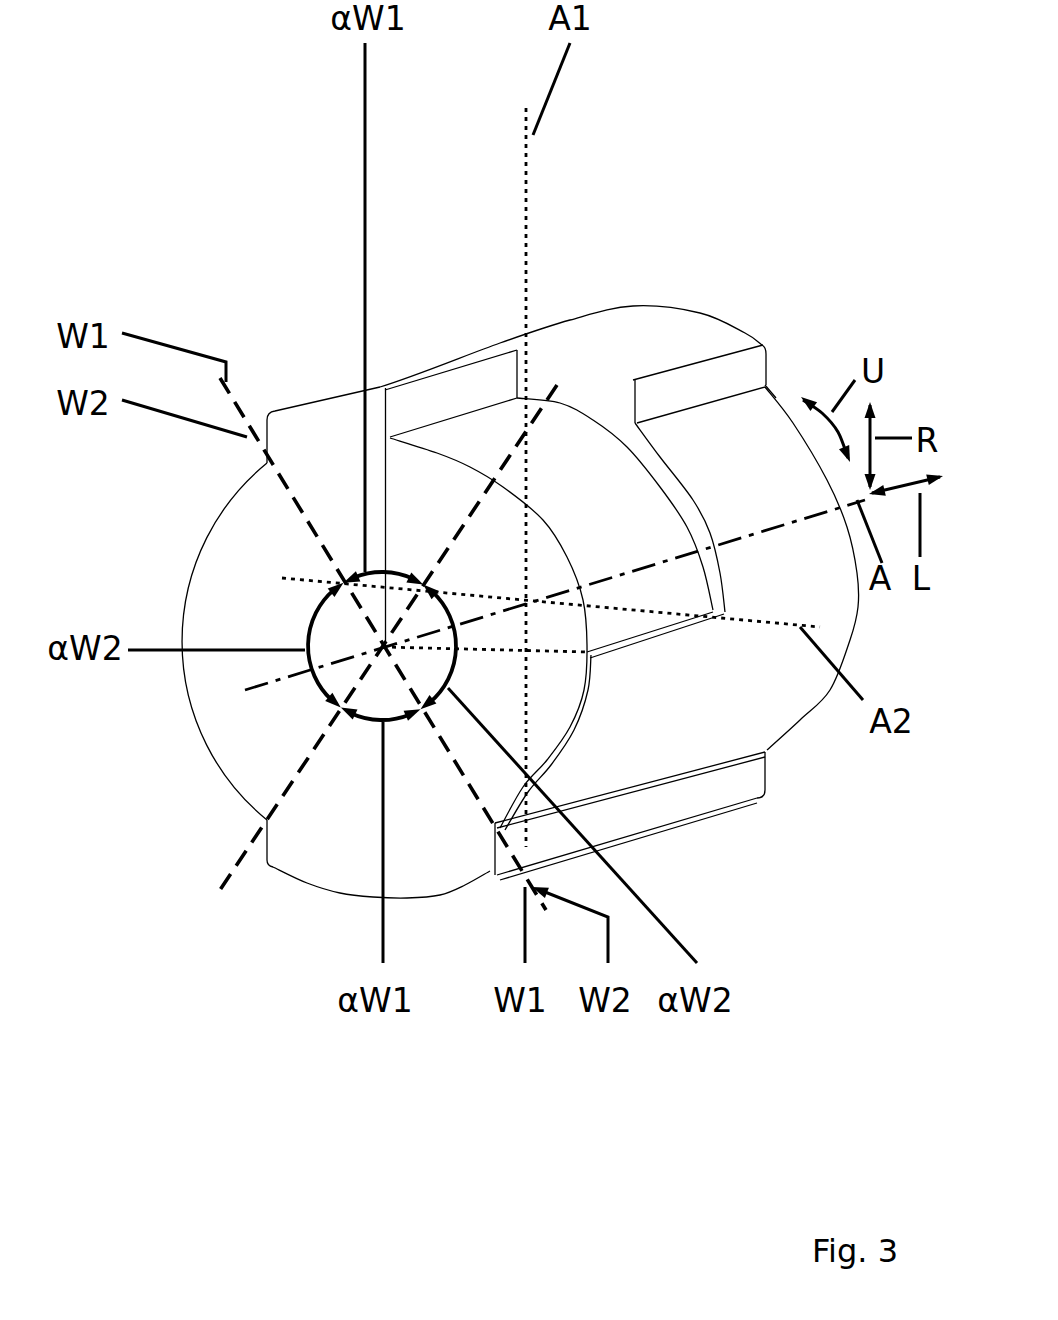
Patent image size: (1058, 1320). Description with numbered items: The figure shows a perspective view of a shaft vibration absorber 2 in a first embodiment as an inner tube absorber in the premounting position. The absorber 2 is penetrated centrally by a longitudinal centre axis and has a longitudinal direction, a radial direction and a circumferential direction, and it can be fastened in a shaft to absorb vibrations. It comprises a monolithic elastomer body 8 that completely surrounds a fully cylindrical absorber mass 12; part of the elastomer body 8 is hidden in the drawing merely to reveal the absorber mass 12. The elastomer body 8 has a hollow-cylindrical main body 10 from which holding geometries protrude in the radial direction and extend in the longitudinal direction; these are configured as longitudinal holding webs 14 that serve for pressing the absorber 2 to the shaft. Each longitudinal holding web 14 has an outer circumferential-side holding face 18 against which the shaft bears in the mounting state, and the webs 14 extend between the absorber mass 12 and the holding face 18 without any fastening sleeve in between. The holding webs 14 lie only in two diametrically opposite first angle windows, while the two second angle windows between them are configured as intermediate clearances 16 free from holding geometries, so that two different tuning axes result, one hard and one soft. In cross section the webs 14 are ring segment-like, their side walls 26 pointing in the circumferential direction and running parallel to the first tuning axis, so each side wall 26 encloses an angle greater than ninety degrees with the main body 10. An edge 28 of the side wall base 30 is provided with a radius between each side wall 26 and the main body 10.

The shaft vibration absorber 2 is at (268, 395).
The elastomer body 8 is at (330, 393).
The main body 10 is at (720, 568).
The absorber mass 12 is at (458, 417).
The longitudinal holding web 14 is at (742, 330).
The intermediate clearance 16 is at (652, 400).
The holding face 18 is at (680, 330).
The side wall 26 is at (768, 372).
The edge 28 is at (768, 382).
The side wall base 30 is at (768, 385).